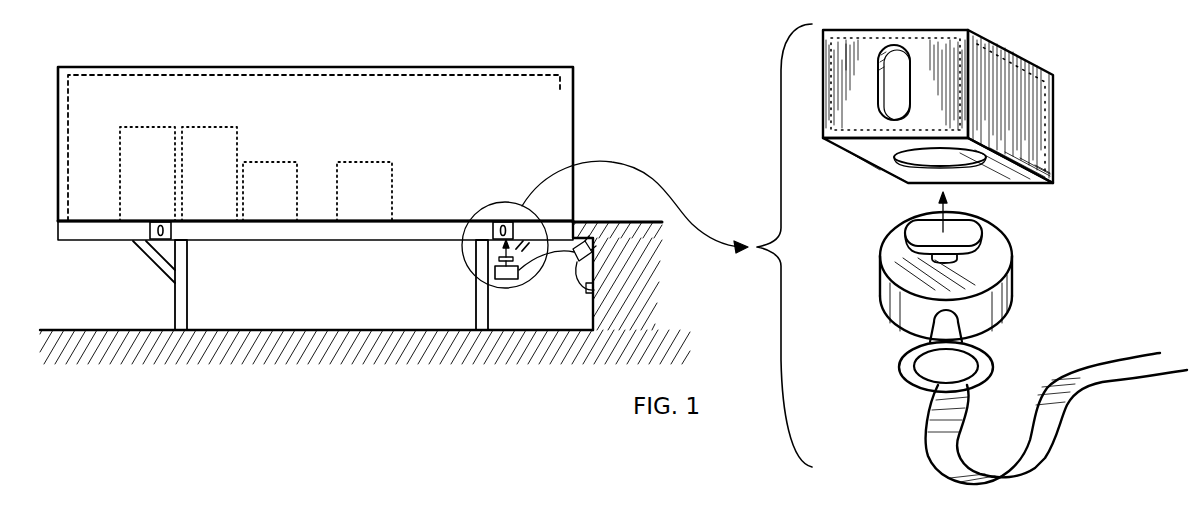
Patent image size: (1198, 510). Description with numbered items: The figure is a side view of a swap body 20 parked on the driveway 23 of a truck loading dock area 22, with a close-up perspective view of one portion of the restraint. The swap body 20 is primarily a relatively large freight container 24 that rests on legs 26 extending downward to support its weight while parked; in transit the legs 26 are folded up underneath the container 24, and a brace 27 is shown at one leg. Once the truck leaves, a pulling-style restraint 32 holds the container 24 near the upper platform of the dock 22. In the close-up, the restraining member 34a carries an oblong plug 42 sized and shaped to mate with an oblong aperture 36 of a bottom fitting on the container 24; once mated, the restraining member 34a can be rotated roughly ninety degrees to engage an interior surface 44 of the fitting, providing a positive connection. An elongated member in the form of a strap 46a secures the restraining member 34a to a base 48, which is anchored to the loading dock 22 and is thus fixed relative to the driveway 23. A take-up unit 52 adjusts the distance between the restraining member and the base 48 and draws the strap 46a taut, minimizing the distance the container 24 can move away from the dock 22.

The swap body 20 is at (622, 125).
The truck loading dock area 22 is at (604, 221).
The driveway 23 is at (278, 330).
The freight container 24 is at (382, 128).
The legs 26 is at (188, 312).
The leg brace 27 is at (150, 259).
The pulling-style restraint 32 is at (541, 304).
The restraining member 34a is at (1018, 275).
The oblong aperture 36 is at (905, 167).
The oblong plug 42 is at (958, 222).
The interior surface 44 is at (1045, 154).
The strap 46a is at (1070, 373).
The base 48 is at (584, 286).
The take-up unit 52 is at (598, 301).